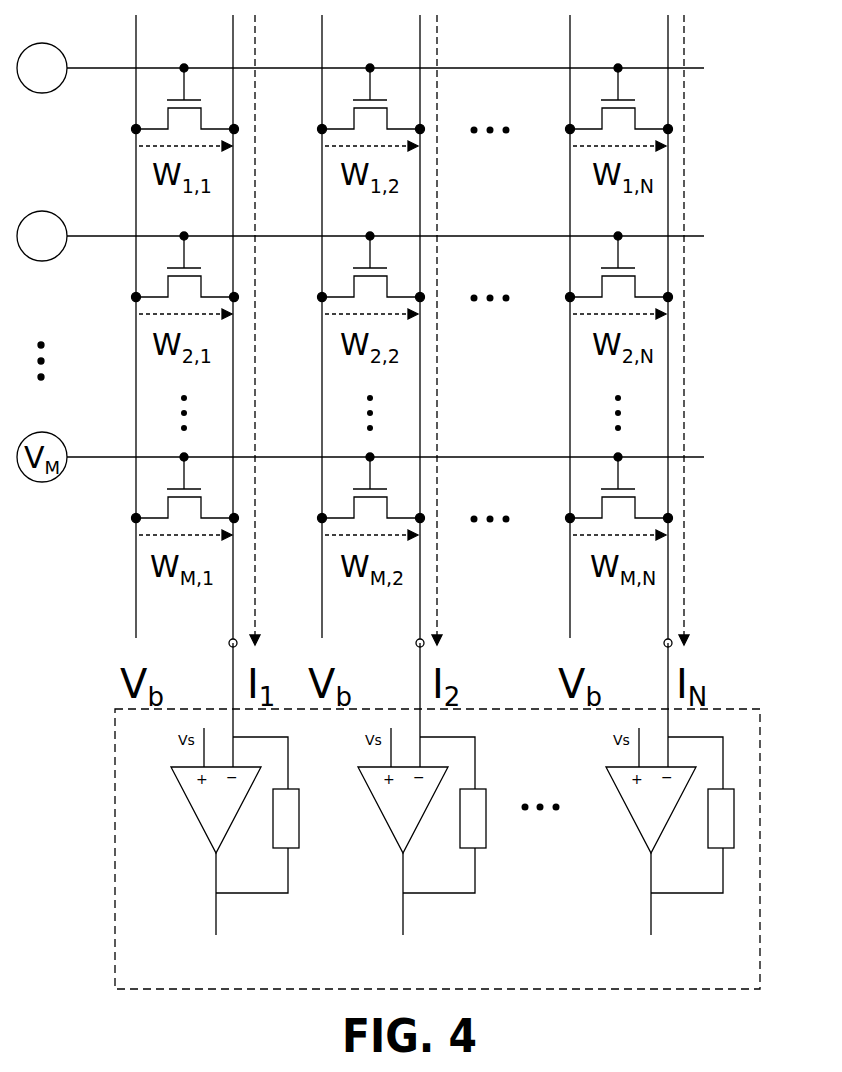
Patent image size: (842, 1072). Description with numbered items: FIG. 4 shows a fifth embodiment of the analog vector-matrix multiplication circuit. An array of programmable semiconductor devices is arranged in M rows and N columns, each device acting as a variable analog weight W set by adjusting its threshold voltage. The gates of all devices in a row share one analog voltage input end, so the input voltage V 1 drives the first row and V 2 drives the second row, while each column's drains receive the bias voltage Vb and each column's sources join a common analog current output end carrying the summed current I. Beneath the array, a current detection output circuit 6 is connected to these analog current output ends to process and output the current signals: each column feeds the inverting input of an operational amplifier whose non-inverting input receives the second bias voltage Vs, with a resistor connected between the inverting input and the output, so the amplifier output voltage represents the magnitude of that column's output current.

The first input voltage line 1 is at (360, 68).
The second input voltage line 2 is at (360, 236).
The current detection output circuit 6 is at (760, 709).